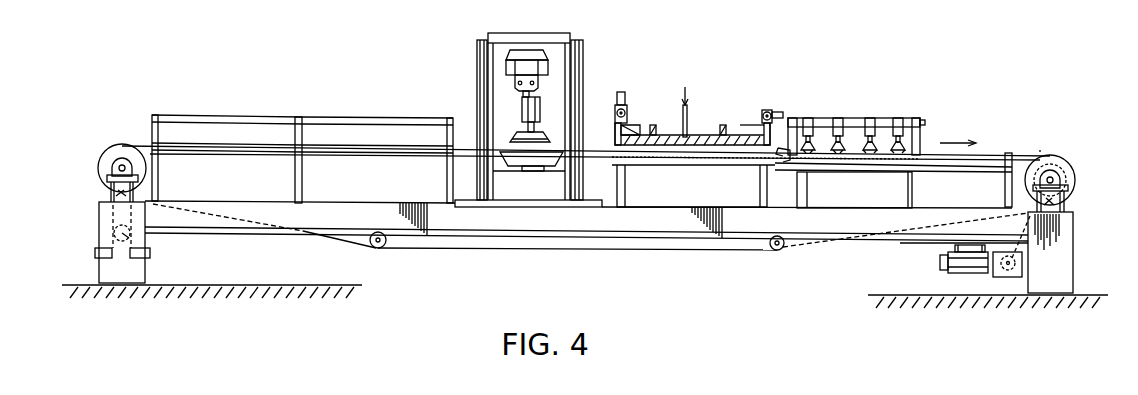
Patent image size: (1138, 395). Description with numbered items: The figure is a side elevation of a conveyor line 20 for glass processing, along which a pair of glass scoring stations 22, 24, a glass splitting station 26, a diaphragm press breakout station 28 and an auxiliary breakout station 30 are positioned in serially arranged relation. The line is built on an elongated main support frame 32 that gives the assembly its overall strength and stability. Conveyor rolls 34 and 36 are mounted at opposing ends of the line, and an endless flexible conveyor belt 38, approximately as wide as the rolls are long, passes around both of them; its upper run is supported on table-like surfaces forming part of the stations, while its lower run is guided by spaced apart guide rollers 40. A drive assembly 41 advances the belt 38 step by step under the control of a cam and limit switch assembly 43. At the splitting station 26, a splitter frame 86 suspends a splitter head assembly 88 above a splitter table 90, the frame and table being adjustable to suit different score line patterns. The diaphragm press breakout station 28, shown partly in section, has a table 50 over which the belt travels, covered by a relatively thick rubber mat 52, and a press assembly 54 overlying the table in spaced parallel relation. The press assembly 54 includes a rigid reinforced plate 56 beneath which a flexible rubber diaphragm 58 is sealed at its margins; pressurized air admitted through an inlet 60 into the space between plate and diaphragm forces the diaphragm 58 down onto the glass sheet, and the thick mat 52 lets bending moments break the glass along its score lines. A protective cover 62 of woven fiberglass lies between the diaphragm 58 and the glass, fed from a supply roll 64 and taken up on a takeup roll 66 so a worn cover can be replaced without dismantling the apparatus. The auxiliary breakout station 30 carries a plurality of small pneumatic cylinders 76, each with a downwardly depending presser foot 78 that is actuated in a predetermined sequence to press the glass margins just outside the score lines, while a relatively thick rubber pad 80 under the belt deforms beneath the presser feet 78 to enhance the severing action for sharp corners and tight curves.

The conveyor line 20 is at (1040, 150).
The glass scoring station 22 is at (188, 106).
The glass scoring station 24 is at (346, 108).
The glass splitting station 26 is at (588, 50).
The diaphragm press breakout station 28 is at (756, 74).
The auxiliary breakout station 30 is at (908, 112).
The main support frame 32 is at (248, 233).
The conveyor roll 34 is at (115, 152).
The conveyor roll 36 is at (1075, 170).
The conveyor belt 38 is at (940, 145).
The guide roller 40 is at (378, 248).
The drive assembly 41 is at (950, 270).
The cam and limit switch assembly 43 is at (148, 248).
The table 50 is at (662, 166).
The rubber mat 52 is at (723, 158).
The press assembly 54 is at (663, 122).
The rigid reinforced plate 56 is at (715, 124).
The flexible rubber diaphragm 58 is at (745, 123).
The inlet 60 is at (690, 108).
The protective cover 62 is at (615, 135).
The supply roll 64 is at (617, 92).
The takeup roll 66 is at (766, 110).
The pneumatic cylinder 76 is at (808, 118).
The presser foot 78 is at (808, 153).
The rubber pad 80 is at (870, 153).
The splitter frame 86 is at (483, 75).
The splitter head assembly 88 is at (540, 68).
The splitter table 90 is at (518, 160).